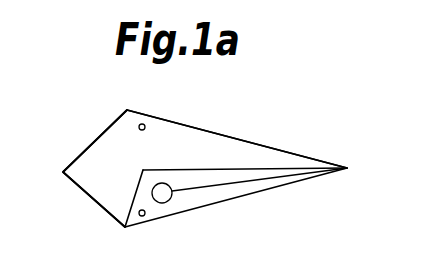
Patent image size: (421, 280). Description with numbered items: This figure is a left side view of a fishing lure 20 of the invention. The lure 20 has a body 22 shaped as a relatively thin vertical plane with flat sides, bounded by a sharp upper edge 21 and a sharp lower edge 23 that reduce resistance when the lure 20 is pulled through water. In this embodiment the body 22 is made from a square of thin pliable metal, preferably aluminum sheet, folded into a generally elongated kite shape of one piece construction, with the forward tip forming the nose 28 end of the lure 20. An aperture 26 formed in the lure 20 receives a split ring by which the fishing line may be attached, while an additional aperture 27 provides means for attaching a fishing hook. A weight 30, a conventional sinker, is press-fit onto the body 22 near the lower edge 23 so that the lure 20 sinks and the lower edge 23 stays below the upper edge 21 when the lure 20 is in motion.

The fishing lure 20 is at (287, 142).
The upper edge 21 is at (188, 126).
The body 22 is at (232, 152).
The lower edge 23 is at (307, 181).
The aperture 26 is at (142, 124).
The aperture 27 is at (145, 218).
The nose 28 is at (63, 173).
The weight 30 is at (171, 199).